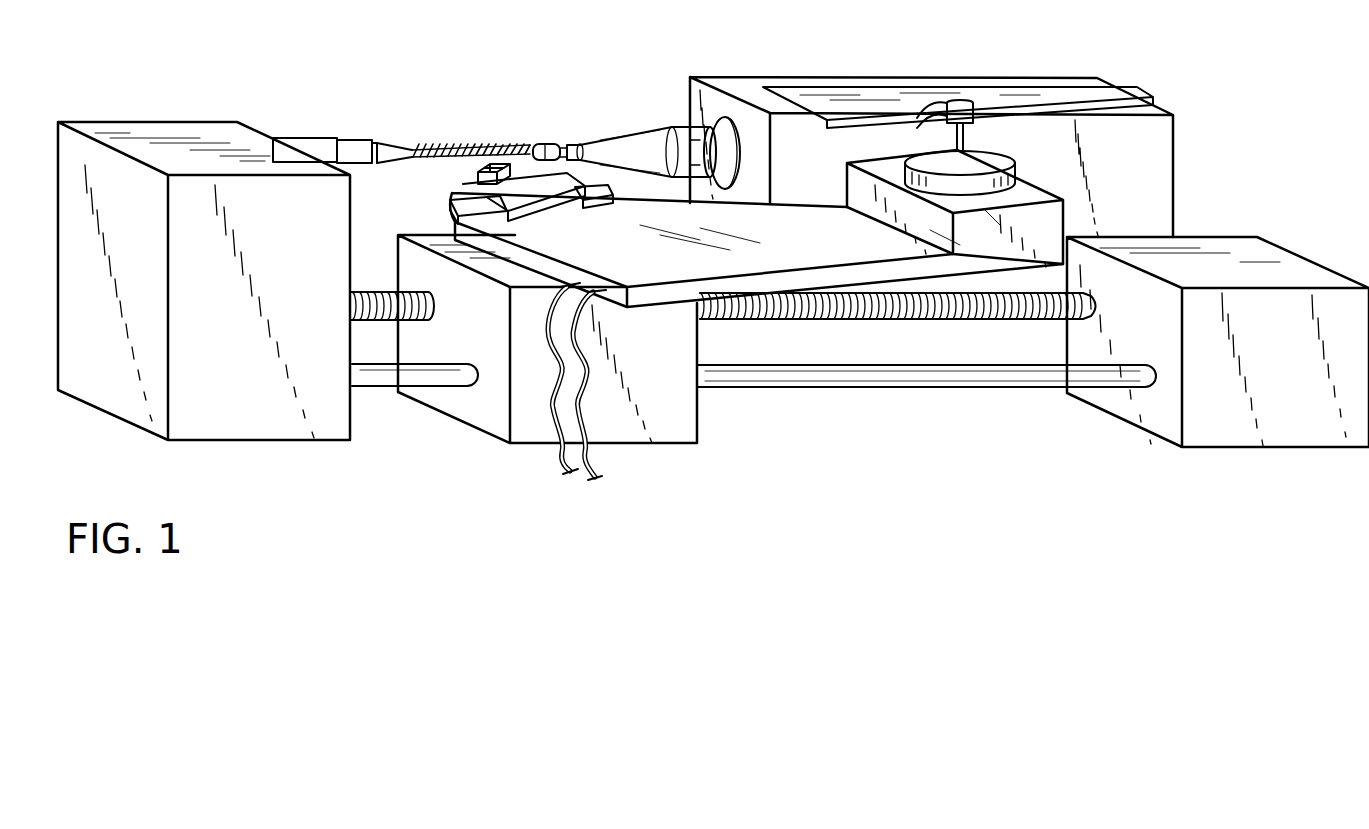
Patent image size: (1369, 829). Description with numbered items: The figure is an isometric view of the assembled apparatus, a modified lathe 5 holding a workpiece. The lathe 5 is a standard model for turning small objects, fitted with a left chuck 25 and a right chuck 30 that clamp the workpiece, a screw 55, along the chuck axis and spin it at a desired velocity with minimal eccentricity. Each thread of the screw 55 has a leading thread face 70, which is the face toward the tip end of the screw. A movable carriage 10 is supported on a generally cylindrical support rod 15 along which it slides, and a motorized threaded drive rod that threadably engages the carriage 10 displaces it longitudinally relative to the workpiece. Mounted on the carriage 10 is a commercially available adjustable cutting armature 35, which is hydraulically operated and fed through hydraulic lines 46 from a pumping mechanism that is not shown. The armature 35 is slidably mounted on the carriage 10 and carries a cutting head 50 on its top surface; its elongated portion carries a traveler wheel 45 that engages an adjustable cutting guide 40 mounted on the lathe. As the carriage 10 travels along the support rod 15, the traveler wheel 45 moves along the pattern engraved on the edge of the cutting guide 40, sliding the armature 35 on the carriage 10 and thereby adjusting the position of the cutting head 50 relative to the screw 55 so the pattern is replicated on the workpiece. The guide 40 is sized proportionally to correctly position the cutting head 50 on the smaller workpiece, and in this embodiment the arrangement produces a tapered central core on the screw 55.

The lathe 5 is at (240, 432).
The movable carriage 10 is at (670, 433).
The support rod 15 is at (856, 384).
The left chuck 25 is at (320, 140).
The right chuck 30 is at (687, 130).
The adjustable cutting armature 35 is at (1046, 230).
The adjustable cutting guide 40 is at (862, 92).
The traveler wheel 45 is at (975, 124).
The hydraulic lines 46 is at (568, 461).
The cutting head 50 is at (543, 207).
The screw 55 is at (398, 148).
The leading thread face 70 is at (938, 322).